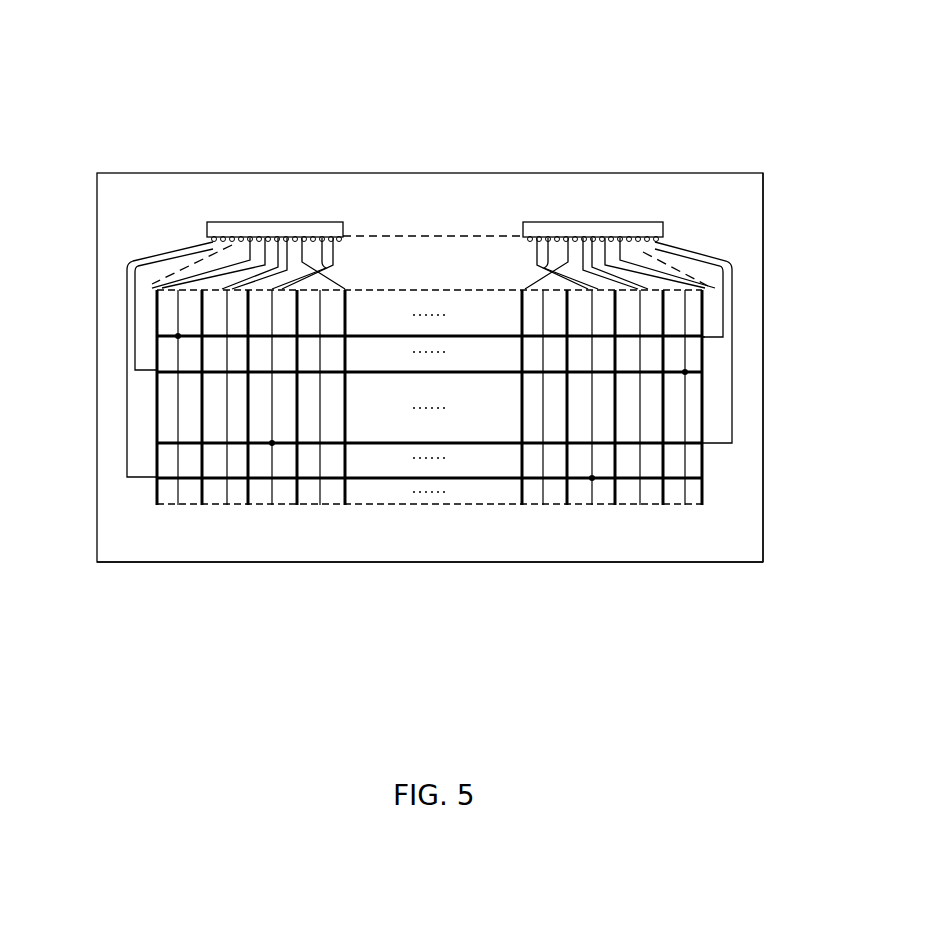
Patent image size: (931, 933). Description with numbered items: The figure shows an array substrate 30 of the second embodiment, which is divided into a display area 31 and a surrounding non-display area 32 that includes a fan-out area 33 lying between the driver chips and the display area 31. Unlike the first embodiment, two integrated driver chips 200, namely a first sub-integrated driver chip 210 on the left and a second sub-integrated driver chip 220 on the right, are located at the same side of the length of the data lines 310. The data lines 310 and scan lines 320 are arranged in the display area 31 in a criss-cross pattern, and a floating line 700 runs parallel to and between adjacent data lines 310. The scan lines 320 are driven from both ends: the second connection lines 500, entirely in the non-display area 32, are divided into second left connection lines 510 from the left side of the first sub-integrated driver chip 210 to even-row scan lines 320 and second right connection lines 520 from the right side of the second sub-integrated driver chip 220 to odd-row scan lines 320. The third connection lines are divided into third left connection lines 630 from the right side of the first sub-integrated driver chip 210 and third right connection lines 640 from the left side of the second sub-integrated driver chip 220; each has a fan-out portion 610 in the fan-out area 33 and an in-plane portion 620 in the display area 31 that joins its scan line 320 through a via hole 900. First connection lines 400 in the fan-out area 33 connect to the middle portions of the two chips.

The integrated driver chip 200 is at (435, 128).
The first sub-integrated driver chip 210 is at (263, 222).
The second sub-integrated driver chip 220 is at (593, 164).
The third left connection line 630 is at (448, 120).
The third right connection line 640 is at (765, 122).
The fan-out portion 610 is at (283, 272).
The in-plane portion 620 is at (268, 312).
The first connection line 400 is at (160, 302).
The second connection line 500 is at (451, 660).
The second left connection line 510 is at (127, 300).
The second right connection line 520 is at (732, 270).
The array substrate 30 is at (318, 660).
The display area 31 is at (438, 506).
The non-display area 32 is at (763, 462).
The fan-out area 33 is at (705, 287).
The data line 310 is at (157, 450).
The scan line 320 is at (176, 338).
The floating line 700 is at (227, 506).
The via hole 900 is at (272, 443).